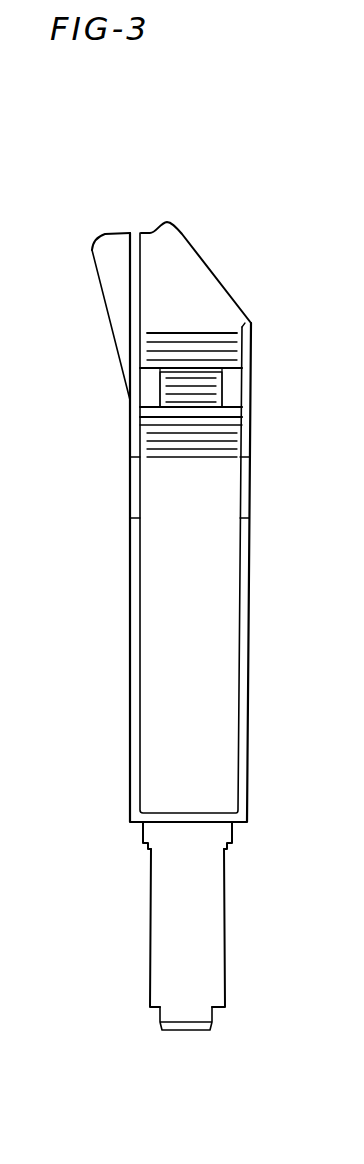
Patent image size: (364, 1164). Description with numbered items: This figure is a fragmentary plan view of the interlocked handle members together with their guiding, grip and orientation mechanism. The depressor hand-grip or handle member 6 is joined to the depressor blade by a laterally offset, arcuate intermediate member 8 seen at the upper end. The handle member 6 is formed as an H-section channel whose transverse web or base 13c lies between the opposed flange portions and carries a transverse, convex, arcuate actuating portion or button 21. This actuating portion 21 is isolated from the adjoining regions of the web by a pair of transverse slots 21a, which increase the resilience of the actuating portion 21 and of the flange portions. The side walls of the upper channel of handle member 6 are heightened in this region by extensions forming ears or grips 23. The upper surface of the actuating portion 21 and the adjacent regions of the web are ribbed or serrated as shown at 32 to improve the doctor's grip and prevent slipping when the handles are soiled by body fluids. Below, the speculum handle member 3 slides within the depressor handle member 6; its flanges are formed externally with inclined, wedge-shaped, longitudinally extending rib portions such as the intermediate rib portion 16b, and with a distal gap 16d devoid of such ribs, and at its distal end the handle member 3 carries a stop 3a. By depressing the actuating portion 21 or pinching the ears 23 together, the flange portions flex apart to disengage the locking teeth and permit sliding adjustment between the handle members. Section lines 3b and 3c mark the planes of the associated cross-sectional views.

The intermediate member 8 is at (113, 250).
The handle member 6 is at (205, 633).
The ears 23 is at (135, 420).
The transverse slots 21a is at (137, 363).
The actuating portion 21 is at (222, 397).
The ribbing 32 is at (180, 437).
The transverse web 13c is at (216, 706).
The intermediate rib portion 16b is at (233, 834).
The distal gap 16d is at (225, 952).
The speculum handle member 3 is at (193, 953).
The stop 3a is at (128, 383).
The section line 3b is at (112, 561).
The section line 3c is at (115, 790).